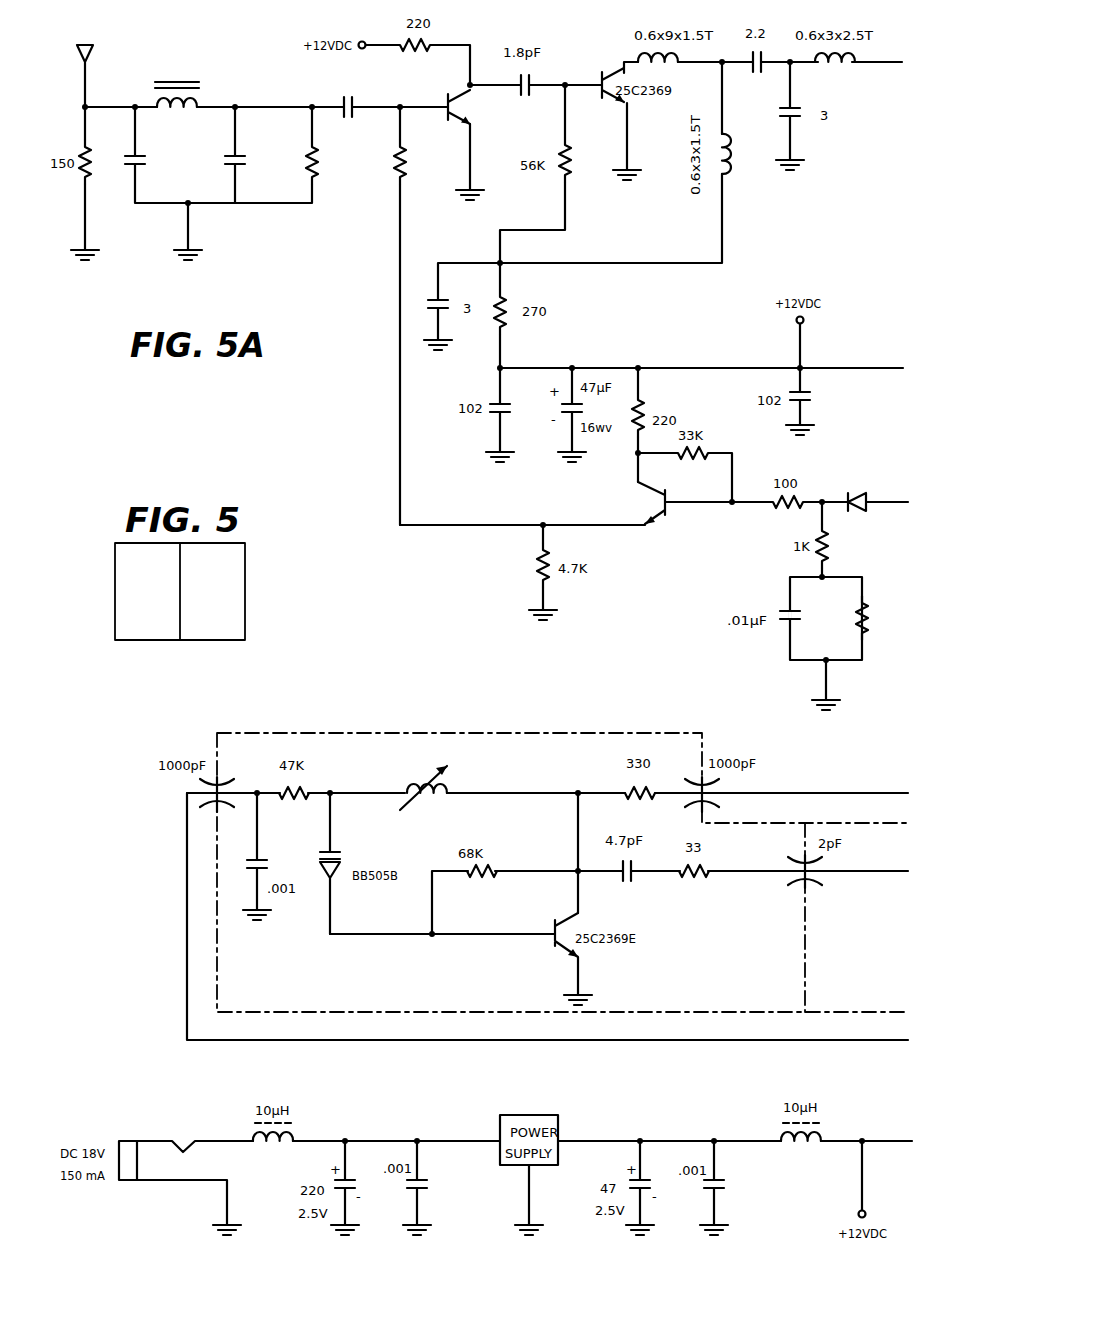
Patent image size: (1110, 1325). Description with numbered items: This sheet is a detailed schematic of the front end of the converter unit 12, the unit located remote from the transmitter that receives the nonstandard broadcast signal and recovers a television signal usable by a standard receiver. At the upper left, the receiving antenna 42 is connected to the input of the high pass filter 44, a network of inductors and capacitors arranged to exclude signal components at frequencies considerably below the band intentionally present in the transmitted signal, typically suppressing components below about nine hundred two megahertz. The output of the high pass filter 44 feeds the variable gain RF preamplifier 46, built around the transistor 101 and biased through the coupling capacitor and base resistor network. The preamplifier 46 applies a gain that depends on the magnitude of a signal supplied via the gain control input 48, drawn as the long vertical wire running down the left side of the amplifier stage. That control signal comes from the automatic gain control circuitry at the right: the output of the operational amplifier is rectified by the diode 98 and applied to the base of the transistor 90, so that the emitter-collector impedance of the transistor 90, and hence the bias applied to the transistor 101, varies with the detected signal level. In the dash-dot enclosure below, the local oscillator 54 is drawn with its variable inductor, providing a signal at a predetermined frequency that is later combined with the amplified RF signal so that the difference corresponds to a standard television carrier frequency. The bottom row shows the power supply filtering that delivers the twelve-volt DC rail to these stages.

In FIG. 5, the converter unit 12 is at (180, 440).
In FIG. 5A, the receiving antenna 42 is at (112, 48).
In FIG. 5A, the high pass filter 44 is at (200, 48).
In FIG. 5A, the variable gain RF preamplifier 46 is at (372, 213).
In FIG. 5A, the gain control input 48 is at (400, 405).
In FIG. 5A, the local oscillator 54 is at (405, 760).
In FIG. 5A, the transistor 90 is at (600, 485).
In FIG. 5A, the diode 98 is at (858, 465).
In FIG. 5A, the transistor 101 is at (462, 120).